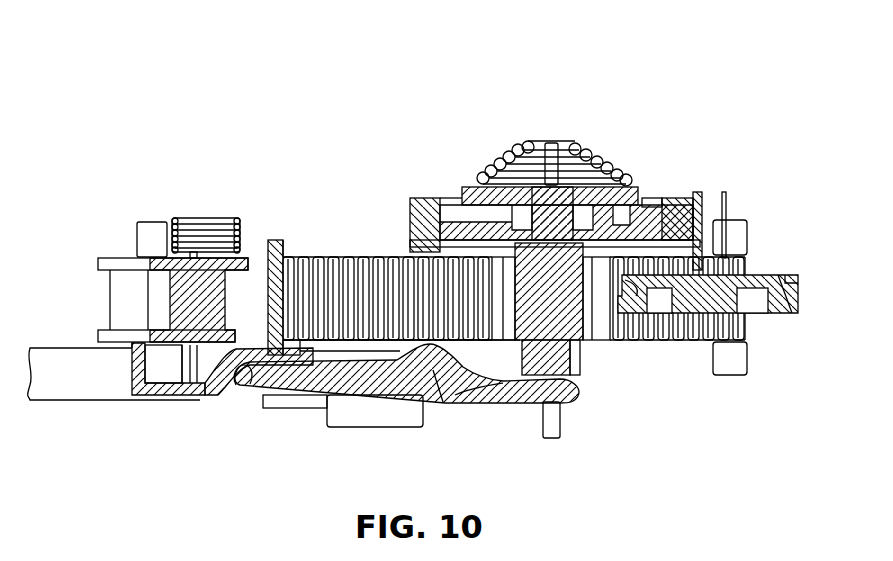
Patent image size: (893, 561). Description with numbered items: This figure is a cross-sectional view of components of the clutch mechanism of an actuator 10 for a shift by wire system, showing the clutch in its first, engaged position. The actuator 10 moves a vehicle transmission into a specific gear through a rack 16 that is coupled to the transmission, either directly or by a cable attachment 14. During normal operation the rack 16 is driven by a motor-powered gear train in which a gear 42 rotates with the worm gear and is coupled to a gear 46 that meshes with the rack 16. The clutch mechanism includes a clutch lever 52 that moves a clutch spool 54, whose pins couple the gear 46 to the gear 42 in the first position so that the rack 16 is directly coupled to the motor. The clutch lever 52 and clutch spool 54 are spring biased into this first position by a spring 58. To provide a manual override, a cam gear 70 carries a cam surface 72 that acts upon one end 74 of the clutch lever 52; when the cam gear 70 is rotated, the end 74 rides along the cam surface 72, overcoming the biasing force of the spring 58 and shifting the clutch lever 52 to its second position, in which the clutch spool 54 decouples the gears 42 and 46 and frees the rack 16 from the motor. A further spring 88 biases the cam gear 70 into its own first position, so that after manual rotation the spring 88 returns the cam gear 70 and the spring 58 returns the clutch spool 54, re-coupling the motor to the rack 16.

The actuator 10 is at (658, 90).
The cable attachment 14 is at (65, 380).
The rack 16 is at (350, 262).
The gear 42 is at (668, 208).
The gear 46 is at (557, 307).
The clutch lever 52 is at (435, 378).
The clutch spool 54 is at (600, 208).
The spring 58 is at (580, 150).
The cam gear 70 is at (137, 393).
The cam surface 72 is at (222, 383).
The end of clutch lever 74 is at (242, 378).
The spring 88 is at (220, 233).